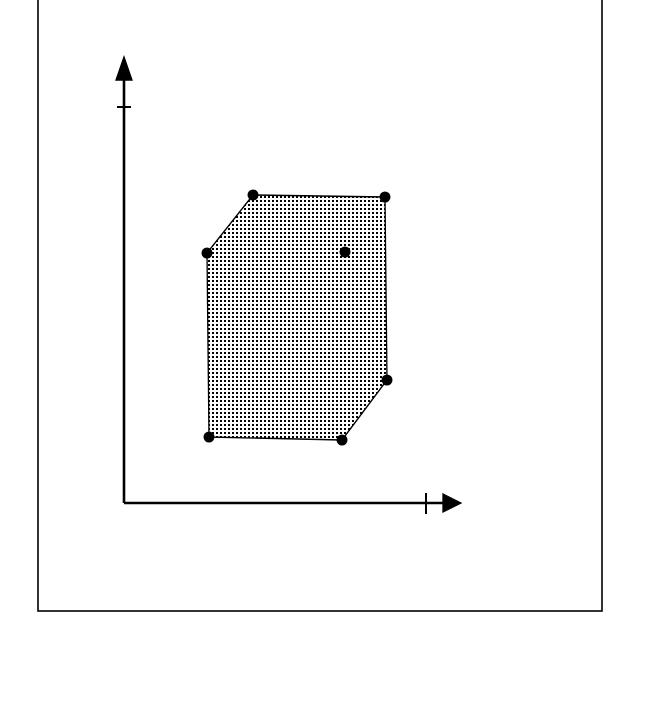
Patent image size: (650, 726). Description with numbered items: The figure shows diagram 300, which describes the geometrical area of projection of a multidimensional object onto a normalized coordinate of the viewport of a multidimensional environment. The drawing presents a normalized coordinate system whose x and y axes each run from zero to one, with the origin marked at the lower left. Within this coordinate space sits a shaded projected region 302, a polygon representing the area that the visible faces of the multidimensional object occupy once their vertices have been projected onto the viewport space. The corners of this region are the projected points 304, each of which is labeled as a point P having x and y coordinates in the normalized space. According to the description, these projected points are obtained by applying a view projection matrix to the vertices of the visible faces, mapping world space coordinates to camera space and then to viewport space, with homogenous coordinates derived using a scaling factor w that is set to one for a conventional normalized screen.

The diagram 300 is at (320, 349).
The polygon region 302 is at (289, 355).
The polygon vertices (points P0-P6) 304 is at (332, 342).